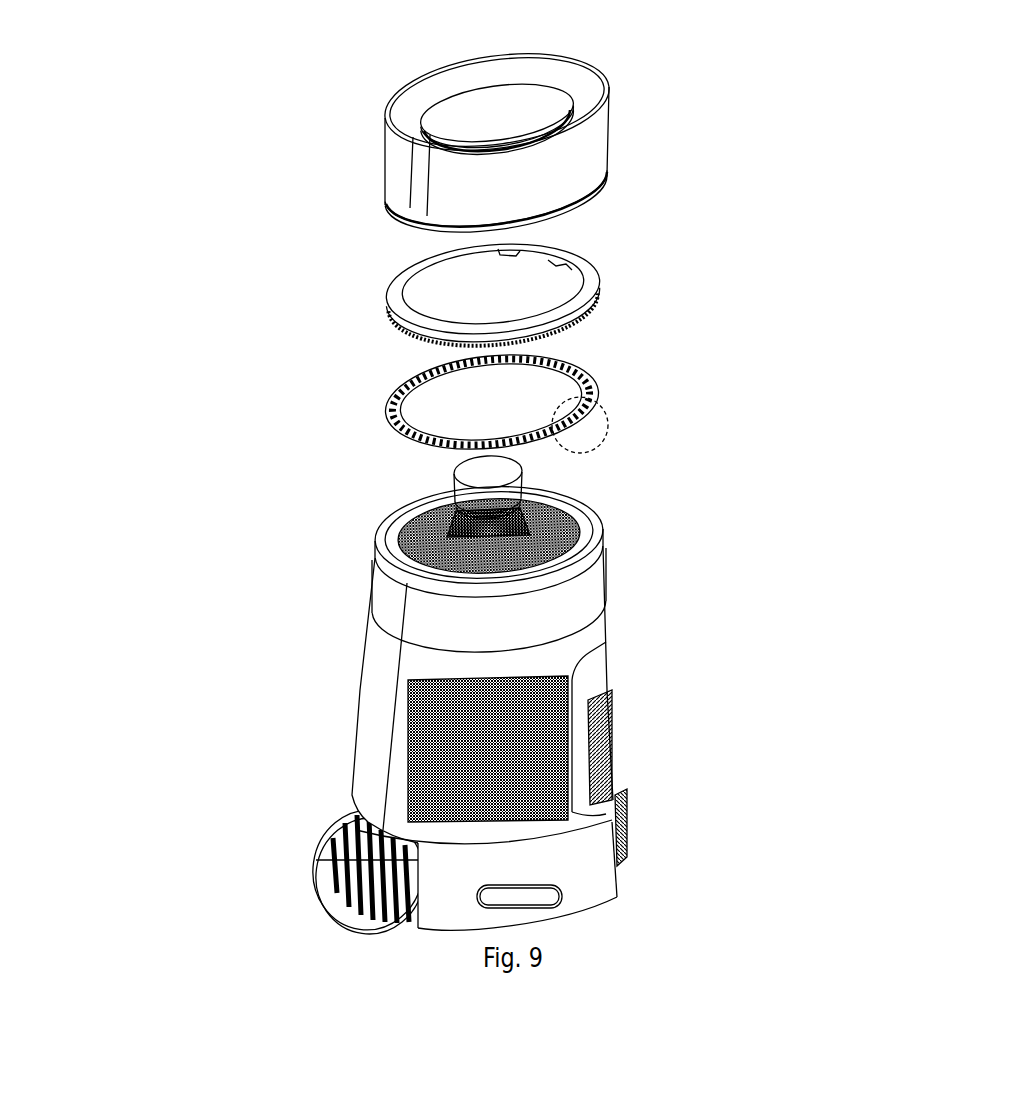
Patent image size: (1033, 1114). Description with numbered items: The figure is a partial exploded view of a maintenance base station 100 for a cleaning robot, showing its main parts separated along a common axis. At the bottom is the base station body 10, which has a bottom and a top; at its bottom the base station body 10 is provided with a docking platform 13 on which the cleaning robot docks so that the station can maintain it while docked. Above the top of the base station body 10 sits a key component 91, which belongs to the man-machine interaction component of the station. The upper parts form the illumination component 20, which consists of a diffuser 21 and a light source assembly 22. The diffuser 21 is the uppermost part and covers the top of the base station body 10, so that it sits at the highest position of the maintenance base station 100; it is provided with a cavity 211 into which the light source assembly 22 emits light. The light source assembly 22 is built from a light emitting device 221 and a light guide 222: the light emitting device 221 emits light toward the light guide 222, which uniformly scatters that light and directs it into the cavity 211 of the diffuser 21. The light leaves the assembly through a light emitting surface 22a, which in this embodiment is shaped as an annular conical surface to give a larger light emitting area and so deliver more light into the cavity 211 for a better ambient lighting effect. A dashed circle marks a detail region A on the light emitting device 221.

The maintenance base station 100 is at (776, 212).
The base station body 10 is at (385, 703).
The docking platform 13 is at (327, 877).
The illumination component 20 is at (168, 207).
The diffuser 21 is at (400, 148).
The cavity 211 is at (540, 112).
The light source assembly 22 is at (270, 335).
The light emitting device 221 is at (387, 413).
The light guide 222 is at (392, 296).
The light emitting surface 22a is at (590, 290).
The key component 91 is at (503, 473).
The detail region A is at (607, 422).